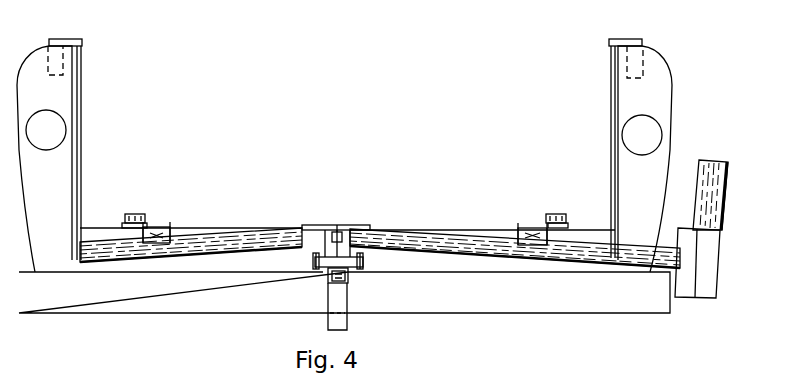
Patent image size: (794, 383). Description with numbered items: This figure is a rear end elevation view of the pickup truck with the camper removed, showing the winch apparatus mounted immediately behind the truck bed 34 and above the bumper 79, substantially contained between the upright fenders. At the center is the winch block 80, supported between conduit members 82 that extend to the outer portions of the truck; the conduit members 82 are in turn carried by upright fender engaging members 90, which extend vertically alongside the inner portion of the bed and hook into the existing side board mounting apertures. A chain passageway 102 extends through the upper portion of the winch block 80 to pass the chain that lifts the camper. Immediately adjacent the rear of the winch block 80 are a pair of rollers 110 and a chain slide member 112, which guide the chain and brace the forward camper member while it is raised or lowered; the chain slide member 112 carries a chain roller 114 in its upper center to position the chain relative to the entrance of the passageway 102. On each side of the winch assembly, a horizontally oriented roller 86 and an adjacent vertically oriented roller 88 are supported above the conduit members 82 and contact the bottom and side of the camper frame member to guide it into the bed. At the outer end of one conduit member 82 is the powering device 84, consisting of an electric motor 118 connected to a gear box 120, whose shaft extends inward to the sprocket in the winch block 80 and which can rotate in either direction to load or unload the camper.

The truck bed 34 is at (90, 227).
The bumper 79 is at (570, 303).
The winch block 80 is at (322, 216).
The conduit members 82 is at (223, 243).
The powering device 84 is at (715, 148).
The horizontally oriented roller 86 is at (157, 226).
The vertically oriented roller 88 is at (153, 197).
The fender engaging members 90 is at (82, 62).
The chain passageway 102 is at (340, 231).
The rollers 110 is at (315, 263).
The chain slide member 112 is at (340, 320).
The chain roller 114 is at (330, 273).
The electric motor 118 is at (724, 182).
The gear box 120 is at (705, 250).